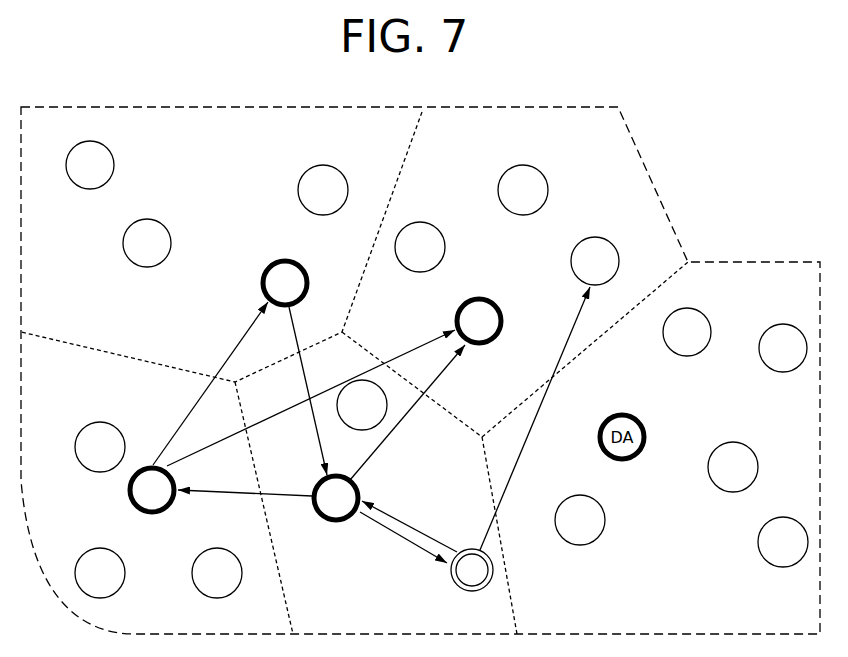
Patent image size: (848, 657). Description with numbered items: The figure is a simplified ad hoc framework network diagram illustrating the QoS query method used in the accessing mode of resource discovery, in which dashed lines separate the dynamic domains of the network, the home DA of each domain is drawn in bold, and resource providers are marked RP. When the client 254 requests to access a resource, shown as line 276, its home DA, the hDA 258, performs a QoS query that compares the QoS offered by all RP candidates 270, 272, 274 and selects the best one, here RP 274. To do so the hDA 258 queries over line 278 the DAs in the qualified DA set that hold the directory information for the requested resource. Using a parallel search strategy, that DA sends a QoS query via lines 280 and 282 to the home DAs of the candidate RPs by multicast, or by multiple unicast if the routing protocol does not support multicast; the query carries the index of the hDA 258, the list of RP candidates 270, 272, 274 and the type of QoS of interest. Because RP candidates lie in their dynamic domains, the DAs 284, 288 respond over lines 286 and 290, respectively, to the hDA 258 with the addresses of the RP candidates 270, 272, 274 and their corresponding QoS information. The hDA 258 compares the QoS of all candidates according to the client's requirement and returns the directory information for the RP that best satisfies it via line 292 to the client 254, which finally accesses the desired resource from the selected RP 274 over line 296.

The client node 254 is at (466, 592).
The home DA (hDA) 258 is at (312, 497).
The RP candidate 270 is at (107, 148).
The RP candidate 272 is at (163, 226).
The RP candidate 274 is at (594, 237).
The ranging signal from mobile device to home distance anchor 276 is at (413, 526).
The query line 278 is at (182, 492).
The QoS query line 280 is at (247, 337).
The QoS query line 282 is at (407, 345).
The DA 284 is at (270, 264).
The response line 286 is at (300, 334).
The DA 288 is at (480, 297).
The response line 290 is at (437, 378).
The result return line 292 is at (396, 535).
The resource access line 296 is at (518, 460).